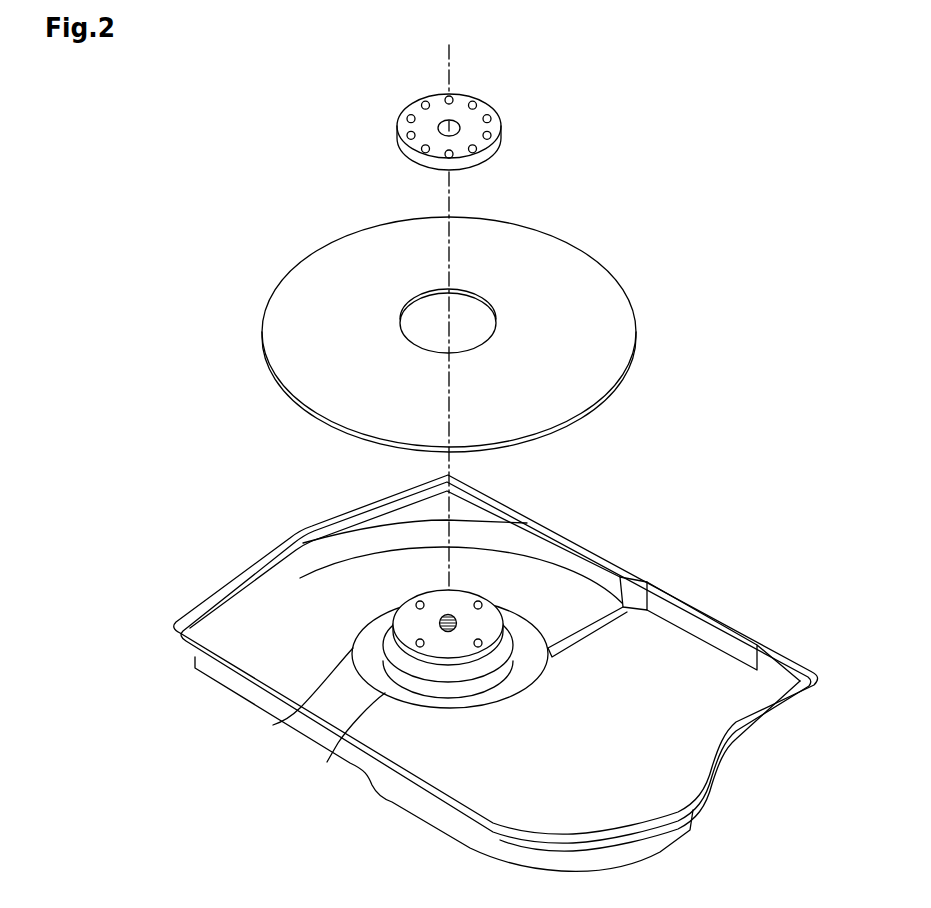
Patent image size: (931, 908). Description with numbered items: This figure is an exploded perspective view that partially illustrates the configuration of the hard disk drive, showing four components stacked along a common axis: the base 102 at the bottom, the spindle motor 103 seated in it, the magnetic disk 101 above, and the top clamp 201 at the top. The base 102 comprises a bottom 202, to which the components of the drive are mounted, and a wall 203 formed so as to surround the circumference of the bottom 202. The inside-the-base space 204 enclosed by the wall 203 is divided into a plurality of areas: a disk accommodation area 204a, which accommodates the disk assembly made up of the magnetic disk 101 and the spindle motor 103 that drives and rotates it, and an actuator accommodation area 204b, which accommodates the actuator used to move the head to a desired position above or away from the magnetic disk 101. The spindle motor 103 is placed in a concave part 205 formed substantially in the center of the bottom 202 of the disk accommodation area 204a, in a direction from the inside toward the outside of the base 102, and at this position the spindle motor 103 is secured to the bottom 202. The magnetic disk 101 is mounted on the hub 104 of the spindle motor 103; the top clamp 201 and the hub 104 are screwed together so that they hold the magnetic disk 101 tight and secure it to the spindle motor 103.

The magnetic disk 101 is at (560, 256).
The base 102 is at (722, 756).
The spindle motor 103 is at (362, 599).
The hub 104 is at (273, 725).
The top clamp 201 is at (487, 107).
The bottom 202 is at (470, 787).
The wall 203 is at (720, 640).
The inside-the-base space 204 is at (674, 581).
The disk accommodation area 204a is at (562, 588).
The actuator accommodation area 204b is at (653, 657).
The concave part 205 is at (328, 760).